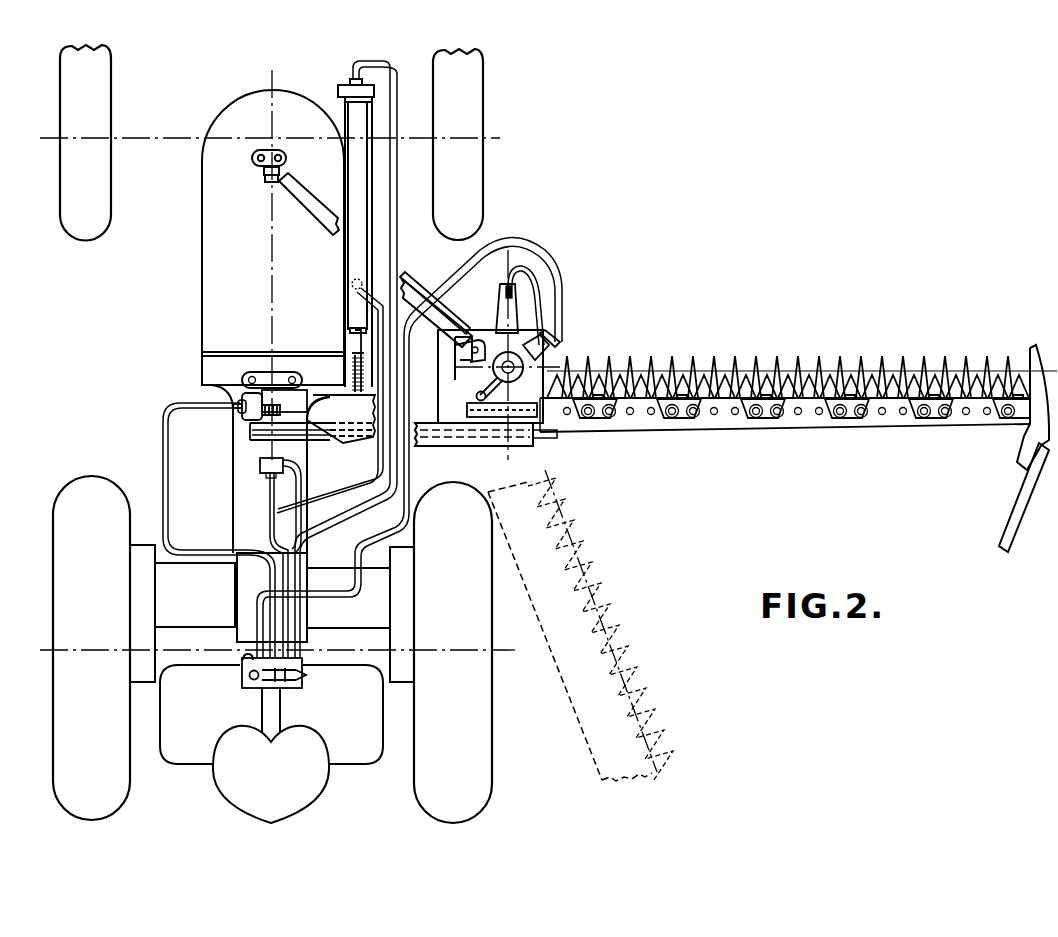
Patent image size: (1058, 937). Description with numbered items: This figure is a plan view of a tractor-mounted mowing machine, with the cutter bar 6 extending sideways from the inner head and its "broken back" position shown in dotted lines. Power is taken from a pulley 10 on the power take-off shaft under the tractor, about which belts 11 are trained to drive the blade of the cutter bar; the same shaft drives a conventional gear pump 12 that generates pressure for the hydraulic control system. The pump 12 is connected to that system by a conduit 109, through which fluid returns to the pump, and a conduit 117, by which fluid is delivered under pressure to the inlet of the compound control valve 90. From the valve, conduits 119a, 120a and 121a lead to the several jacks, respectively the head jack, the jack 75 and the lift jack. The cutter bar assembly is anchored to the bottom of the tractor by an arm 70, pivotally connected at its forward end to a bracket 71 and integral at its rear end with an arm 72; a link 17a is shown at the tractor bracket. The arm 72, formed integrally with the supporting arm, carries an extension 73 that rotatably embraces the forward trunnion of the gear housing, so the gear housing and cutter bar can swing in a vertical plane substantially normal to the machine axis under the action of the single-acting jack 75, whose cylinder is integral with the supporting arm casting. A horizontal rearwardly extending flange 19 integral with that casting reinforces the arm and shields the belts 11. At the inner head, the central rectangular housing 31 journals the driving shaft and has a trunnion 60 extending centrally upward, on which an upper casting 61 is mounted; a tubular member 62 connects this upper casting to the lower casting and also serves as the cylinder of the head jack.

The cutter bar 6 is at (800, 428).
The pulley 10 is at (255, 439).
The belts 11 is at (330, 436).
The gear pump 12 is at (259, 465).
The link 17a is at (279, 371).
The horizontal rearwardly extending flange 19 is at (428, 441).
The rectangular housing 31 is at (552, 410).
The trunnion 60 is at (516, 365).
The upper casting 61 is at (535, 342).
The tubular member 62 is at (524, 358).
The arm 70 is at (432, 290).
The bracket 71 is at (269, 188).
The arm 72 is at (462, 320).
The extension 73 is at (518, 294).
The jack 75 is at (341, 385).
The compound control valve 90 is at (242, 683).
The conduit 109 is at (342, 478).
The conduit 117 is at (303, 500).
The conduit 119a is at (563, 260).
The conduit 120a is at (164, 447).
The conduit 121a is at (398, 248).